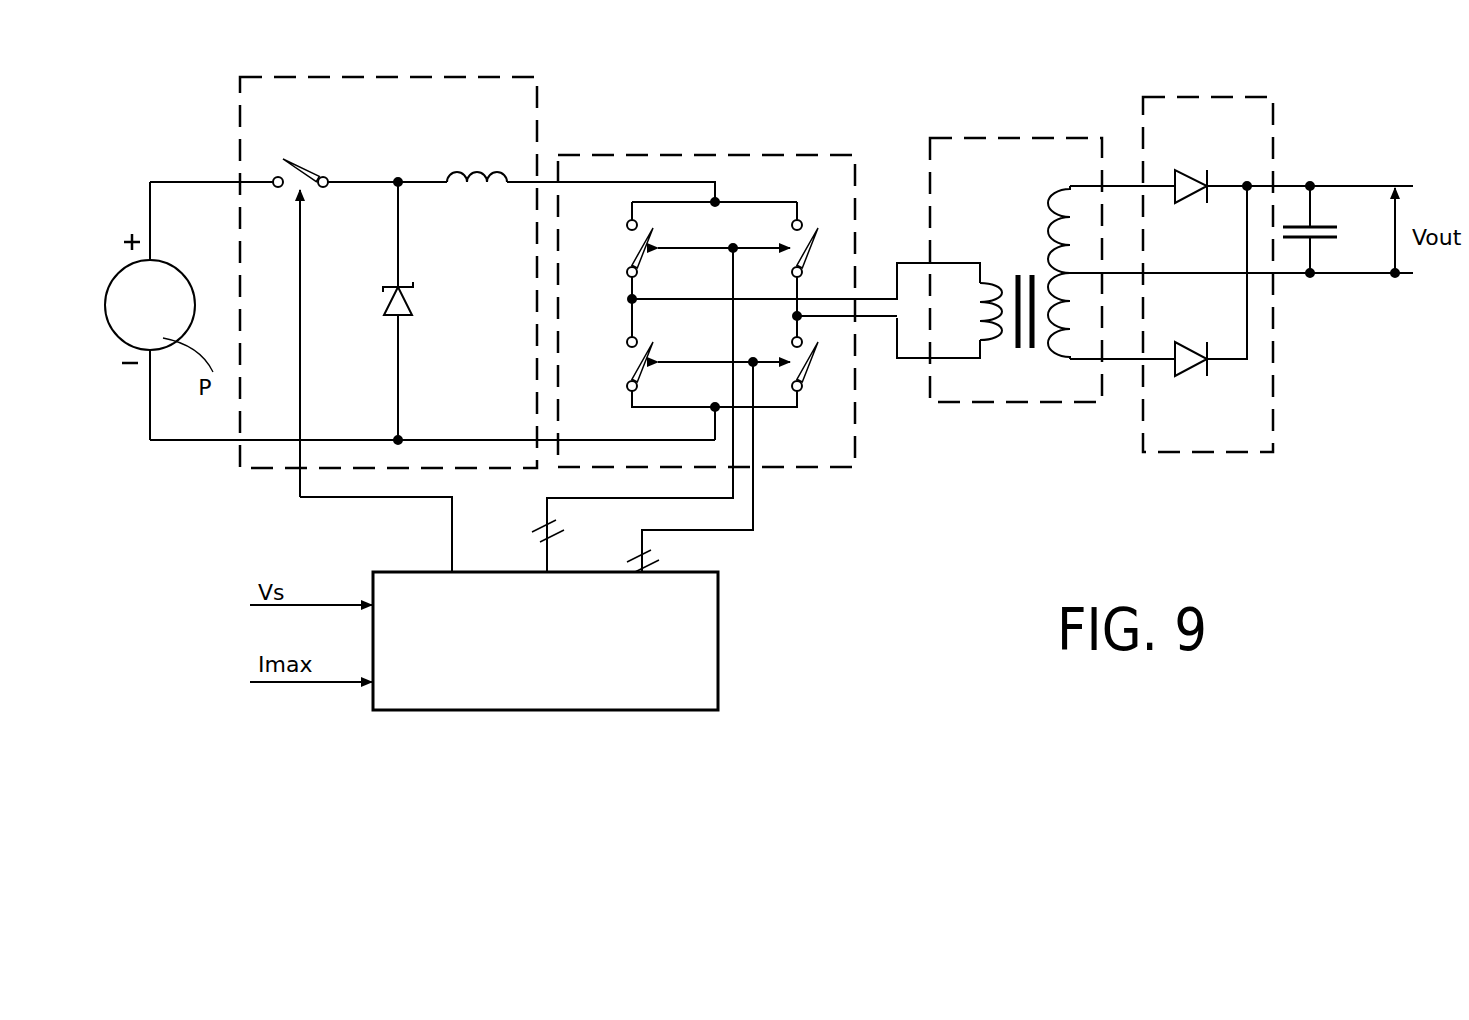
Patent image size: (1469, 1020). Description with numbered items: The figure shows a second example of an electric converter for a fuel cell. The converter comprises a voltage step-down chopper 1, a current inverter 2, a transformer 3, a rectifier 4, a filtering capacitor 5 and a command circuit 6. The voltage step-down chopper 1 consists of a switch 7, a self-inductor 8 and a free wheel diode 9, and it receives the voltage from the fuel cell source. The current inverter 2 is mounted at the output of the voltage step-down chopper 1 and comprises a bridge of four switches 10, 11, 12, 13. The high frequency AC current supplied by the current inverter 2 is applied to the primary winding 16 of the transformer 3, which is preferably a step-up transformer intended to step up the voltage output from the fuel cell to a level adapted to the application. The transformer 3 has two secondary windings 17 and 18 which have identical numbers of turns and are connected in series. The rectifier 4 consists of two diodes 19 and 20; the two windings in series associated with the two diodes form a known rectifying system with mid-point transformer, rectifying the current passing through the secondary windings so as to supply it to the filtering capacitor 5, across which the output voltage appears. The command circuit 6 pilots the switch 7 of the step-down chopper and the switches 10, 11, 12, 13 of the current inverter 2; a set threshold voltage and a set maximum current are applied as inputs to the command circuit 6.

The voltage step-down chopper 1 is at (243, 148).
The current inverter 2 is at (770, 170).
The transformer 3 is at (999, 229).
The rectifier 4 is at (1241, 274).
The filtering capacitor 5 is at (1325, 222).
The command circuit 6 is at (713, 645).
The switch 7 is at (313, 160).
The self-inductor 8 is at (475, 160).
The free wheel diode 9 is at (410, 300).
The switch 10 is at (628, 258).
The switch 11 is at (805, 235).
The switch 12 is at (812, 372).
The switch 13 is at (637, 355).
The primary winding 16 is at (990, 300).
The secondary winding 17 is at (1065, 235).
The secondary winding 18 is at (1065, 310).
The diode 19 is at (1195, 170).
The diode 20 is at (1192, 372).